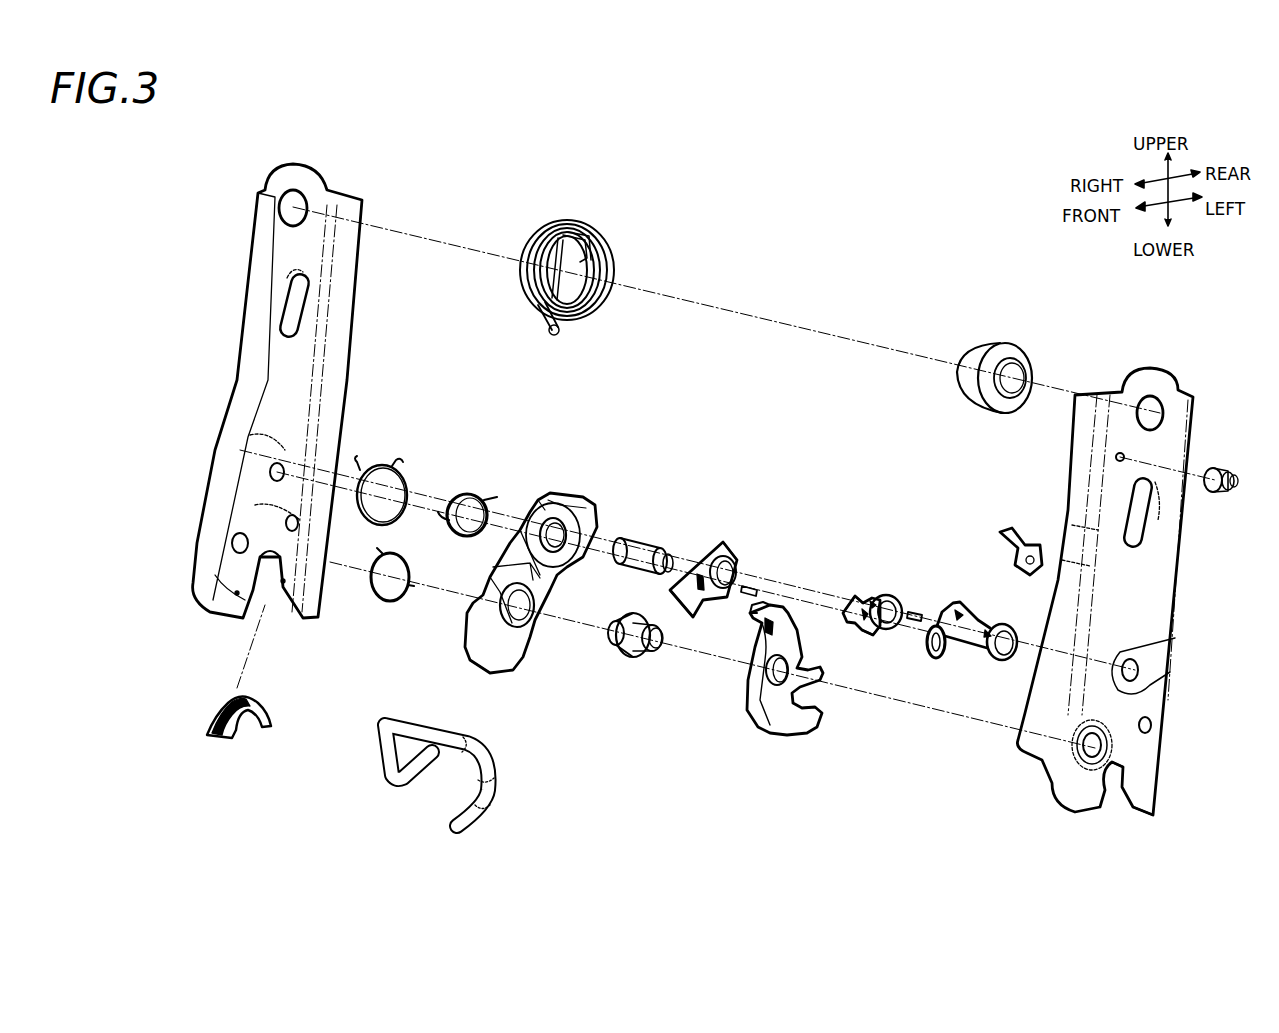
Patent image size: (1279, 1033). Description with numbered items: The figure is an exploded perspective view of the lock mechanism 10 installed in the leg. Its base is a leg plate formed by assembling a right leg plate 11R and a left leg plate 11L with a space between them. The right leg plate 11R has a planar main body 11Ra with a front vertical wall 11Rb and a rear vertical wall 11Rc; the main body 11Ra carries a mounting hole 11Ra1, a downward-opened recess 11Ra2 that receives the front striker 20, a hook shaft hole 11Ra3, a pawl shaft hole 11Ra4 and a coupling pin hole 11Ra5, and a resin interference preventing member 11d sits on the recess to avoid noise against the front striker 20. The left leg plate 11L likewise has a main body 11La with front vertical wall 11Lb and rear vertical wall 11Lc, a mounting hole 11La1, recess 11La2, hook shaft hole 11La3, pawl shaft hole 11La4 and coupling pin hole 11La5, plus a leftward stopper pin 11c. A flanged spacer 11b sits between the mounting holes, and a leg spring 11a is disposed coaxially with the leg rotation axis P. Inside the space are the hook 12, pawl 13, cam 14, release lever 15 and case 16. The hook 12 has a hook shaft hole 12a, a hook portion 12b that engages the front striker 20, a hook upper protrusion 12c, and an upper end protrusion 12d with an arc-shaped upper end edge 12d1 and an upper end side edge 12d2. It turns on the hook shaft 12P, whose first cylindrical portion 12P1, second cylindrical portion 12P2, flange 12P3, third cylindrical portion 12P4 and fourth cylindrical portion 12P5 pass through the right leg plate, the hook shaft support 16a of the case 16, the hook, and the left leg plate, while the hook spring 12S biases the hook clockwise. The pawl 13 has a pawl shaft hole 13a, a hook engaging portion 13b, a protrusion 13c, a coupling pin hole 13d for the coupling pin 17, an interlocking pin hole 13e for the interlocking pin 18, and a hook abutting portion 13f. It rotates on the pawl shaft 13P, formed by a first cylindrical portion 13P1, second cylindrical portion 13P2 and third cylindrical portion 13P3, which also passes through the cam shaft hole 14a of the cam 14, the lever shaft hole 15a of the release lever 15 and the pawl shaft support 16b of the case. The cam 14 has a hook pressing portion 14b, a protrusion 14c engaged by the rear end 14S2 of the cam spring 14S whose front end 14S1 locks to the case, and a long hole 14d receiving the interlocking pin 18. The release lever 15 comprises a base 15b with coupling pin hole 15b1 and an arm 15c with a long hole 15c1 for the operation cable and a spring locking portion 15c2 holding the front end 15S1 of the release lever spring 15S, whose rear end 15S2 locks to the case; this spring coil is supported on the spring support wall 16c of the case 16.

The lock mechanism 10 is at (860, 260).
The leg rotation axis P is at (748, 318).
The right leg plate 11R is at (255, 218).
The main body 11Ra is at (315, 257).
The mounting hole 11Ra1 is at (307, 192).
The recess 11Ra2 is at (268, 582).
The hook shaft hole 11Ra3 is at (238, 555).
The pawl shaft hole 11Ra4 is at (285, 466).
The coupling pin hole 11Ra5 is at (313, 586).
The front vertical wall 11Rb is at (265, 240).
The rear vertical wall 11Rc is at (350, 200).
The interference preventing member 11d is at (243, 740).
The front striker 20 is at (495, 778).
The leg spring 11a is at (578, 224).
The spacer 11b is at (980, 345).
The stopper pin 11c is at (1216, 470).
The left leg plate 11L is at (1197, 412).
The main body 11La is at (1180, 392).
The mounting hole 11La1 is at (1142, 398).
The recess 11La2 is at (1128, 778).
The hook shaft hole 11La3 is at (1085, 758).
The pawl shaft hole 11La4 is at (1150, 673).
The coupling pin hole 11La5 is at (1150, 732).
The front vertical wall 11Lb is at (1085, 440).
The rear vertical wall 11Lc is at (1140, 812).
The release lever spring 15S is at (398, 467).
The front end 15S1 is at (359, 462).
The rear end 15S2 is at (398, 460).
The cam spring 14S is at (456, 496).
The front end 14S1 is at (438, 513).
The rear end 14S2 is at (492, 497).
The hook spring 12S is at (389, 603).
The case 16 is at (531, 572).
The hook shaft support 16a is at (528, 640).
The pawl shaft support 16b is at (551, 528).
The spring support wall 16c is at (570, 572).
The pawl shaft 13P is at (638, 535).
The first cylindrical portion 13P1 is at (614, 543).
The second cylindrical portion 13P2 is at (632, 565).
The third cylindrical portion 13P3 is at (666, 553).
The cam 14 is at (692, 551).
The cam shaft hole 14a is at (717, 542).
The hook pressing portion 14b is at (690, 603).
The protrusion 14c is at (741, 557).
The long hole 14d is at (698, 576).
The interlocking pin 18 is at (749, 586).
The hook 12 is at (778, 658).
The hook shaft hole 12a is at (762, 668).
The hook portion 12b is at (814, 728).
The hook upper protrusion 12c is at (753, 630).
The upper end protrusion 12d is at (792, 583).
The upper end edge 12d1 is at (768, 604).
The upper end side edge 12d2 is at (788, 616).
The hook shaft 12P is at (638, 676).
The first cylindrical portion 12P1 is at (616, 640).
The second cylindrical portion 12P2 is at (622, 652).
The flange 12P3 is at (628, 652).
The third cylindrical portion 12P4 is at (634, 650).
The fourth cylindrical portion 12P5 is at (652, 642).
The pawl 13 is at (864, 644).
The pawl shaft hole 13a is at (889, 595).
The hook engaging portion 13b is at (868, 636).
The protrusion 13c is at (850, 624).
The coupling pin hole 13d is at (856, 596).
The interlocking pin hole 13e is at (860, 605).
The hook abutting portion 13f is at (884, 630).
The coupling pin 17 is at (915, 612).
The release lever 15 is at (981, 655).
The lever shaft hole 15a is at (990, 650).
The base 15b is at (1005, 624).
The coupling pin hole 15b1 is at (985, 660).
The arm 15c is at (942, 614).
The long hole 15c1 is at (936, 660).
The spring locking portion 15c2 is at (962, 603).